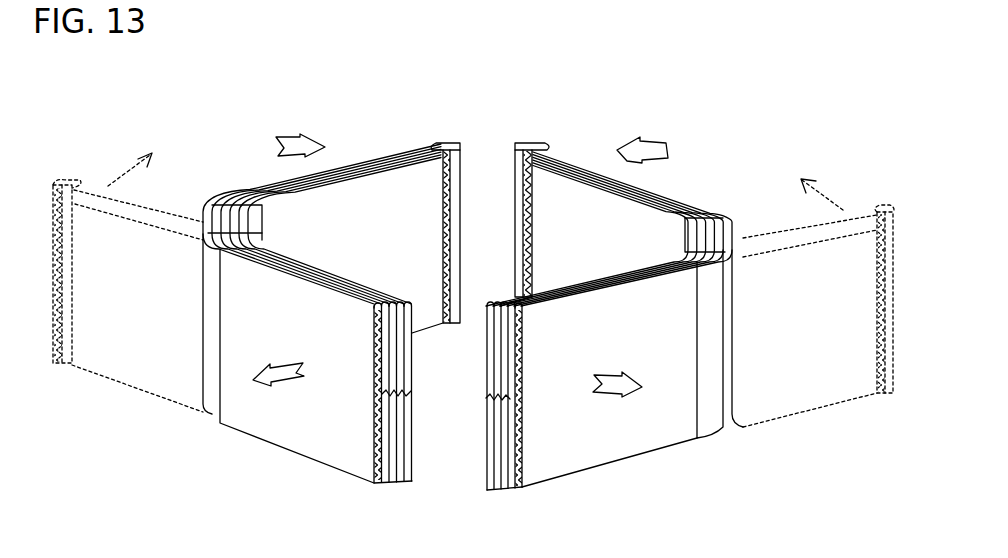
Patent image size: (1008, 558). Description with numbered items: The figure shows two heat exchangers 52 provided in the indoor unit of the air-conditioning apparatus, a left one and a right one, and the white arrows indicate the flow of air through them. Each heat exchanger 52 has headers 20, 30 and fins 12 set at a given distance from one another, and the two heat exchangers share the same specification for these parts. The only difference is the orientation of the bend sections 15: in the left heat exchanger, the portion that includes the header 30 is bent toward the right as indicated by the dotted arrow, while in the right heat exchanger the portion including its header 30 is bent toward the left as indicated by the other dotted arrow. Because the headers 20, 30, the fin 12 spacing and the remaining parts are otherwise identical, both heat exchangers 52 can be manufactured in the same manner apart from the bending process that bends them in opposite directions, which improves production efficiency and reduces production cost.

The heat exchanger 52 is at (248, 166).
The fin 12 is at (371, 153).
The bend section 15 is at (208, 213).
The header 30 is at (70, 182).
The header 20 is at (420, 484).